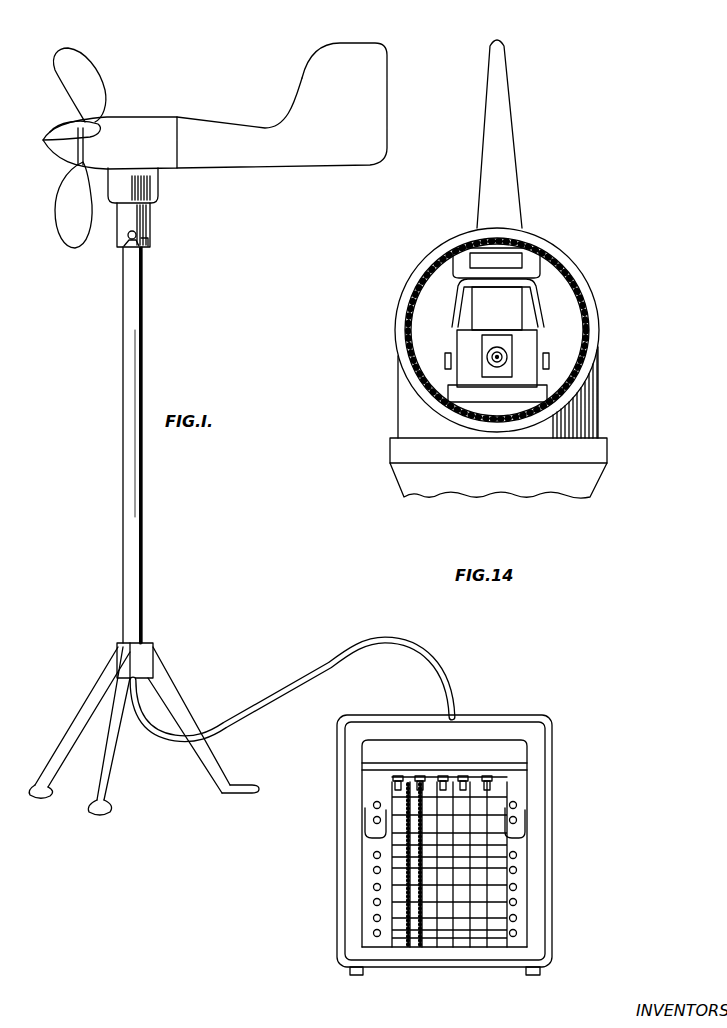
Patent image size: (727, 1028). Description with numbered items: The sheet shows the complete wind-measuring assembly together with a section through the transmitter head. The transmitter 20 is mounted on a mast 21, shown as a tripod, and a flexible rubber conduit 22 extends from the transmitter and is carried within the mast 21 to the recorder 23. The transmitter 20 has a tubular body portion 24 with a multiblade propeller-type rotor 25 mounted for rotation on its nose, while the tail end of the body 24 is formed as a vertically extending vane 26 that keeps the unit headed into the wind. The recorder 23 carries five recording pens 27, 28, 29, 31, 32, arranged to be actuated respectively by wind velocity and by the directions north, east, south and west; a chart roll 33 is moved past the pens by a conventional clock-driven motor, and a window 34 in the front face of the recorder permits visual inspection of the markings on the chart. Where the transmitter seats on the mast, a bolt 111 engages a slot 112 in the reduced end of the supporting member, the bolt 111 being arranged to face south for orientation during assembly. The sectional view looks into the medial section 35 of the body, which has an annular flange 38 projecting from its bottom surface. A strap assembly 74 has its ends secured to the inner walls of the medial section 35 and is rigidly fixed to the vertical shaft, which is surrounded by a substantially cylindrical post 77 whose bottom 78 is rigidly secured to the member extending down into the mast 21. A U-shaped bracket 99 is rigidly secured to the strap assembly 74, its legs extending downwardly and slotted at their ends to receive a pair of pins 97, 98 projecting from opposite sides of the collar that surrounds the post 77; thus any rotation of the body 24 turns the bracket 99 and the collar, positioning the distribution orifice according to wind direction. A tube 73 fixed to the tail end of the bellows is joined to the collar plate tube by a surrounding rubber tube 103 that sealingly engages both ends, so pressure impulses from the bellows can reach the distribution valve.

In FIG. 1, the transmitter 20 is at (122, 117).
In FIG. 1, the mast 21 is at (124, 461).
In FIG. 1, the flexible rubber conduit 22 is at (316, 668).
In FIG. 1, the recorder 23 is at (553, 750).
In FIG. 1, the tubular body portion 24 is at (250, 152).
In FIG. 1, the multiblade propeller-type rotor 25 is at (65, 50).
In FIG. 1, the vane 26 is at (373, 87).
In FIG. 14, the vane 26 is at (513, 92).
In FIG. 1, the recording pen 27 is at (398, 787).
In FIG. 1, the recording pen 28 is at (420, 790).
In FIG. 1, the recording pen 29 is at (443, 790).
In FIG. 1, the recording pen 31 is at (463, 790).
In FIG. 1, the recording pen 32 is at (497, 790).
In FIG. 1, the chart roll 33 is at (480, 915).
In FIG. 1, the window 34 is at (374, 932).
In FIG. 14, the medial section 35 is at (550, 263).
In FIG. 14, the annular flange 38 is at (612, 455).
In FIG. 14, the tube 73 is at (510, 368).
In FIG. 14, the strap assembly 74 is at (457, 263).
In FIG. 14, the post 77 is at (525, 310).
In FIG. 14, the bottom 78 is at (552, 393).
In FIG. 14, the pin 97 is at (445, 360).
In FIG. 14, the pin 98 is at (552, 358).
In FIG. 14, the U-shaped bracket 99 is at (452, 305).
In FIG. 14, the rubber tube 103 is at (508, 344).
In FIG. 1, the bolt 111 is at (122, 245).
In FIG. 1, the slot 112 is at (148, 247).